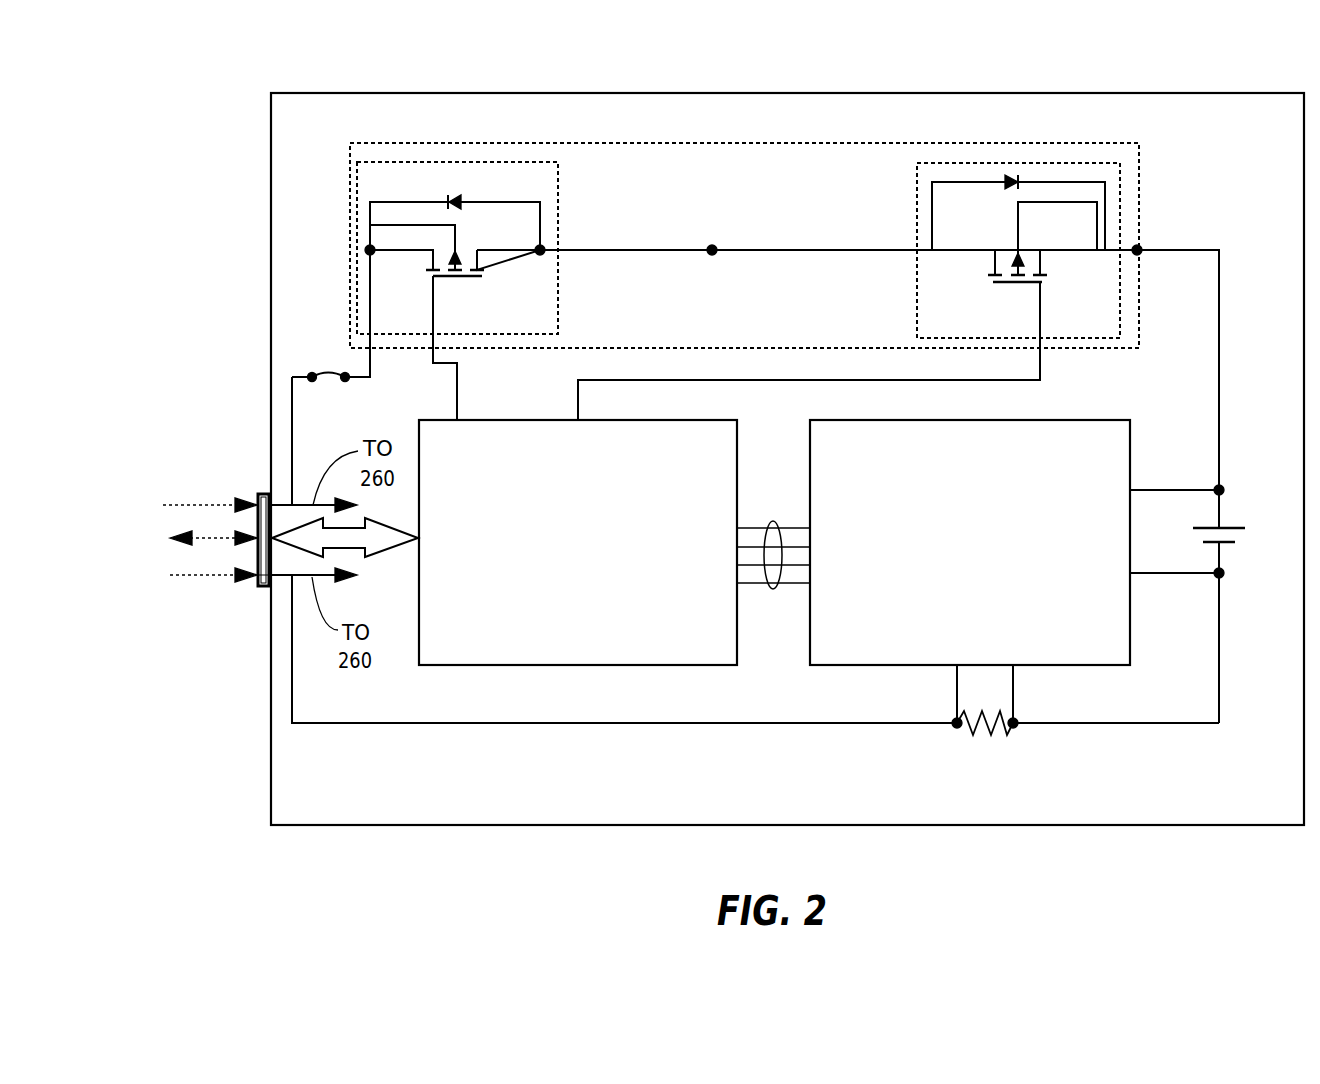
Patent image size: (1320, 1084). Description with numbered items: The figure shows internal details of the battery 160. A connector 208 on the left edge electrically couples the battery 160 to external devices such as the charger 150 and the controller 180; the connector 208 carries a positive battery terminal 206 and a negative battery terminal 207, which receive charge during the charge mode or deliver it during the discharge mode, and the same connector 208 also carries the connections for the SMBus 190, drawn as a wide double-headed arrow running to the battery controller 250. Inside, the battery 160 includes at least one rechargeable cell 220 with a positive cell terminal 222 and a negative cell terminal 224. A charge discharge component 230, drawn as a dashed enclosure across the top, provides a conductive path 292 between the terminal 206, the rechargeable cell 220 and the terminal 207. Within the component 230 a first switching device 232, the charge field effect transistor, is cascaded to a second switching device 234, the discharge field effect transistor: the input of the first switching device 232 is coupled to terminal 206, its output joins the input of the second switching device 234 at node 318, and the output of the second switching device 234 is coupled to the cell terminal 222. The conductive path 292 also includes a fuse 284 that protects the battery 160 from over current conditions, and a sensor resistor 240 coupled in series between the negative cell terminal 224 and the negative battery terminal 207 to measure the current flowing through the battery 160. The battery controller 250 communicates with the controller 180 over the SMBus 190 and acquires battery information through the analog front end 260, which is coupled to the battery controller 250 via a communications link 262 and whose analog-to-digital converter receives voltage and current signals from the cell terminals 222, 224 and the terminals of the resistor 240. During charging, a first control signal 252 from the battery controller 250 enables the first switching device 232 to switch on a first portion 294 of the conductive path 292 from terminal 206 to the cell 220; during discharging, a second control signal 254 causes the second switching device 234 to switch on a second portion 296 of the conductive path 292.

The battery 160 is at (410, 812).
The charge discharge component 230 is at (842, 143).
The first switching device 232 is at (549, 324).
The second switching device 234 is at (958, 327).
The node 318 is at (536, 254).
The first portion of the conductive path 294 is at (630, 250).
The second portion of the conductive path 296 is at (798, 250).
The conductive path 292 is at (1197, 250).
The fuse 284 is at (334, 368).
The positive battery terminal 206 is at (257, 500).
The negative battery terminal 207 is at (257, 584).
The connector 208 is at (263, 589).
The charger 150 is at (212, 578).
The controller 180 is at (213, 534).
The SMBus 190 is at (398, 540).
The battery controller 250 is at (595, 570).
The first control signal 252 is at (458, 397).
The second control signal 254 is at (727, 380).
The analog front end (AFE) 260 is at (988, 570).
The communications link 262 is at (772, 590).
The positive cell terminal 222 is at (1221, 487).
The negative cell terminal 224 is at (1217, 578).
The rechargeable cell 220 is at (1234, 526).
The sensor resistor 240 is at (968, 731).